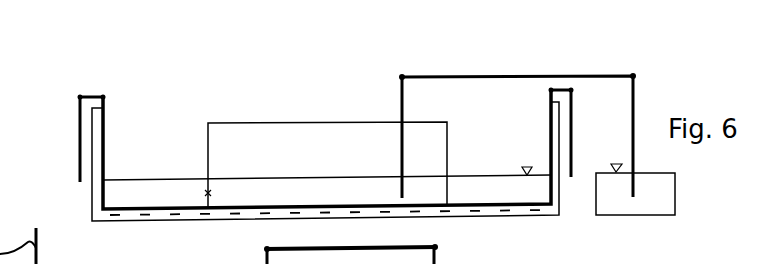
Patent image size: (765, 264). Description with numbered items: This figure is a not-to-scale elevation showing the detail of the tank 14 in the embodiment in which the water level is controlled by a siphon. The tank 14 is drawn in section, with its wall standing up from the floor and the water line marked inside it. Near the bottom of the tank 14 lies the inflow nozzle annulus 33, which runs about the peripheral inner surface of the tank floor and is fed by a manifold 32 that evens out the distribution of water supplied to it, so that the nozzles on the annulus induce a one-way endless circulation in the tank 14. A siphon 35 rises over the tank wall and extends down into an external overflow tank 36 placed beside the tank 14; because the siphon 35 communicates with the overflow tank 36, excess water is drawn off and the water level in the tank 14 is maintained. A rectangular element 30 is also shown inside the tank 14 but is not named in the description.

The tank 14 is at (102, 152).
The panel 30 is at (207, 149).
The manifold 32 is at (79, 119).
The inflow nozzle annulus 33 is at (167, 212).
The siphon 35 is at (432, 75).
The external overflow tank 36 is at (652, 193).